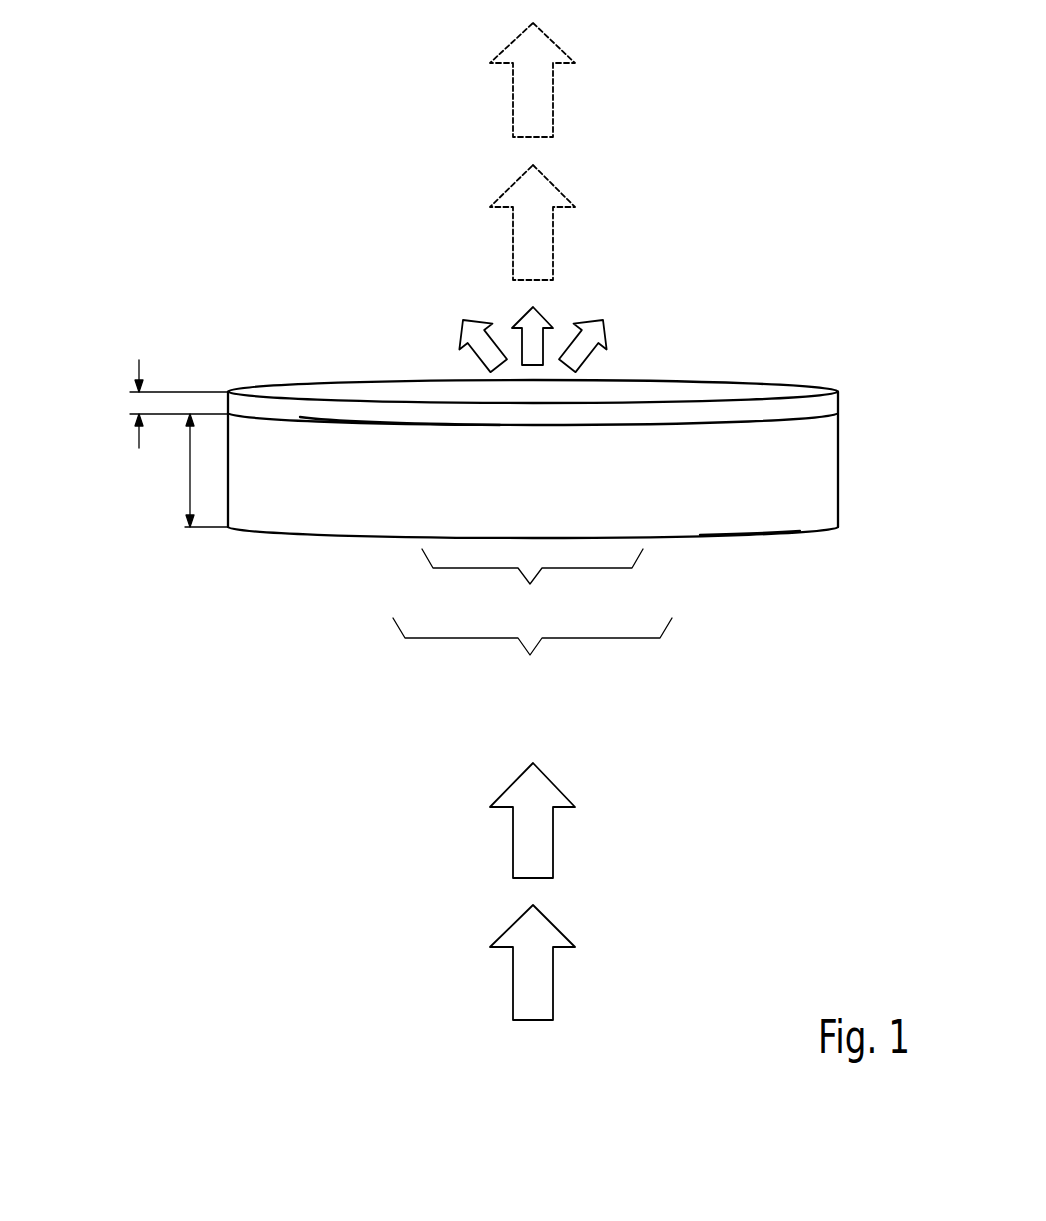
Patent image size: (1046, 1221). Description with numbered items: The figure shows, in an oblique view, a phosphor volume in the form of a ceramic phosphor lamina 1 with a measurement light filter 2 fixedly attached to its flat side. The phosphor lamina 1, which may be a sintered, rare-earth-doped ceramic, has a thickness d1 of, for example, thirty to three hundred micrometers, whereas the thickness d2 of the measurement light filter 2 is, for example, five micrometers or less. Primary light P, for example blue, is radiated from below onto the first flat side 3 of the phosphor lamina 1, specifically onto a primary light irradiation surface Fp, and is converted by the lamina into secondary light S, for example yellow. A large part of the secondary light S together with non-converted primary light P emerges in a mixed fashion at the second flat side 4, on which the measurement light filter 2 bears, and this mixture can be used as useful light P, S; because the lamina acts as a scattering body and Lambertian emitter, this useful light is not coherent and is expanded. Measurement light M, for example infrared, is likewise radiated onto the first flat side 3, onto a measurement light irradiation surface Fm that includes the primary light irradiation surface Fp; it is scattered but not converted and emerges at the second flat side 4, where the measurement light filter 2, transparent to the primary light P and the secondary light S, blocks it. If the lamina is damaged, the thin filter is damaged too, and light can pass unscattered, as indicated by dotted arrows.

The phosphor lamina 1 is at (838, 463).
The measurement light filter 2 is at (838, 404).
The first flat side 3 is at (752, 537).
The second flat side 4 is at (387, 428).
The thickness of the phosphor lamina d1 is at (190, 466).
The thickness of the measurement light filter d2 is at (138, 404).
The primary light P is at (553, 105).
The measurement light M is at (553, 249).
The secondary light S is at (600, 338).
The primary light irradiation surface Fp is at (532, 585).
The measurement light irradiation surface Fm is at (532, 655).